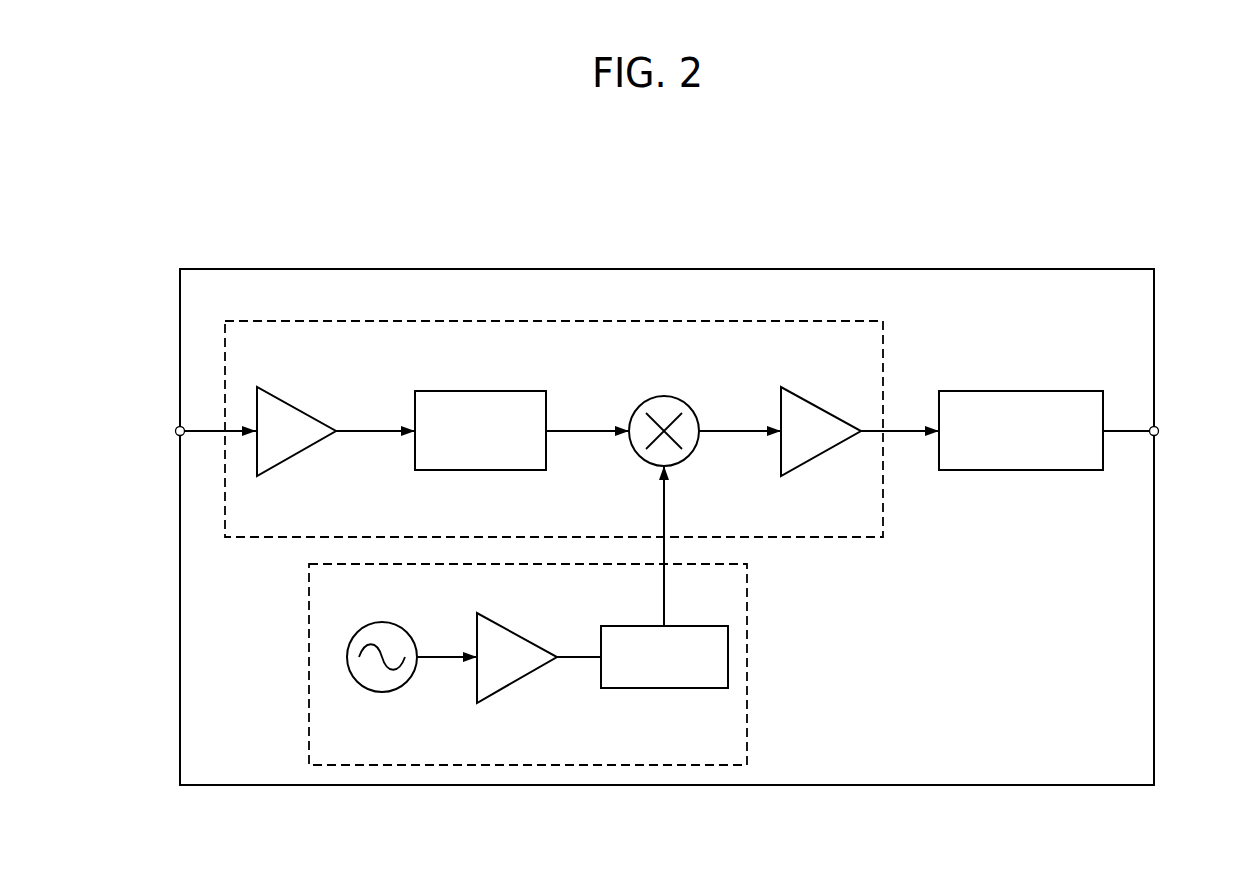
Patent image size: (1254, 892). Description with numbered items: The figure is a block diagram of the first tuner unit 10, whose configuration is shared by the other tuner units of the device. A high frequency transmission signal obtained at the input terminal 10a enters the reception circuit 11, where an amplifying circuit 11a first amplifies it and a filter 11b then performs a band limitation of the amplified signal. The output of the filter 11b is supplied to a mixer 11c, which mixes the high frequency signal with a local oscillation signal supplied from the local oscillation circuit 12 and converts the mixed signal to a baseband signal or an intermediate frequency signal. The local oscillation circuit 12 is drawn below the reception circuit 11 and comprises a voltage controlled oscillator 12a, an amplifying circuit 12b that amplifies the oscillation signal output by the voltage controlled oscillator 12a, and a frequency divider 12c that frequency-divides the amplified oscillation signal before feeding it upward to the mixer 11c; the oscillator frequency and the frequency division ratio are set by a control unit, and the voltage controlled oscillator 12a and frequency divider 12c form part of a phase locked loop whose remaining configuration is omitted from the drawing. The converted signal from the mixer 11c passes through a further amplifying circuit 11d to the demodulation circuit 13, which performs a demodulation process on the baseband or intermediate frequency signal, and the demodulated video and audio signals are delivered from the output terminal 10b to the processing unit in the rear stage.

The first tuner unit 10 is at (641, 269).
The input terminal 10a is at (175, 431).
The output terminal 10b is at (1159, 431).
The reception circuit 11 is at (845, 538).
The amplifying circuit 11a is at (291, 404).
The filter 11b is at (478, 391).
The mixer 11c is at (666, 396).
The amplifying circuit 11d is at (815, 404).
The local oscillation circuit 12 is at (309, 591).
The voltage controlled oscillator 12a is at (382, 692).
The amplifying circuit 12b is at (522, 680).
The frequency divider 12c is at (668, 688).
The demodulation circuit 13 is at (1022, 471).